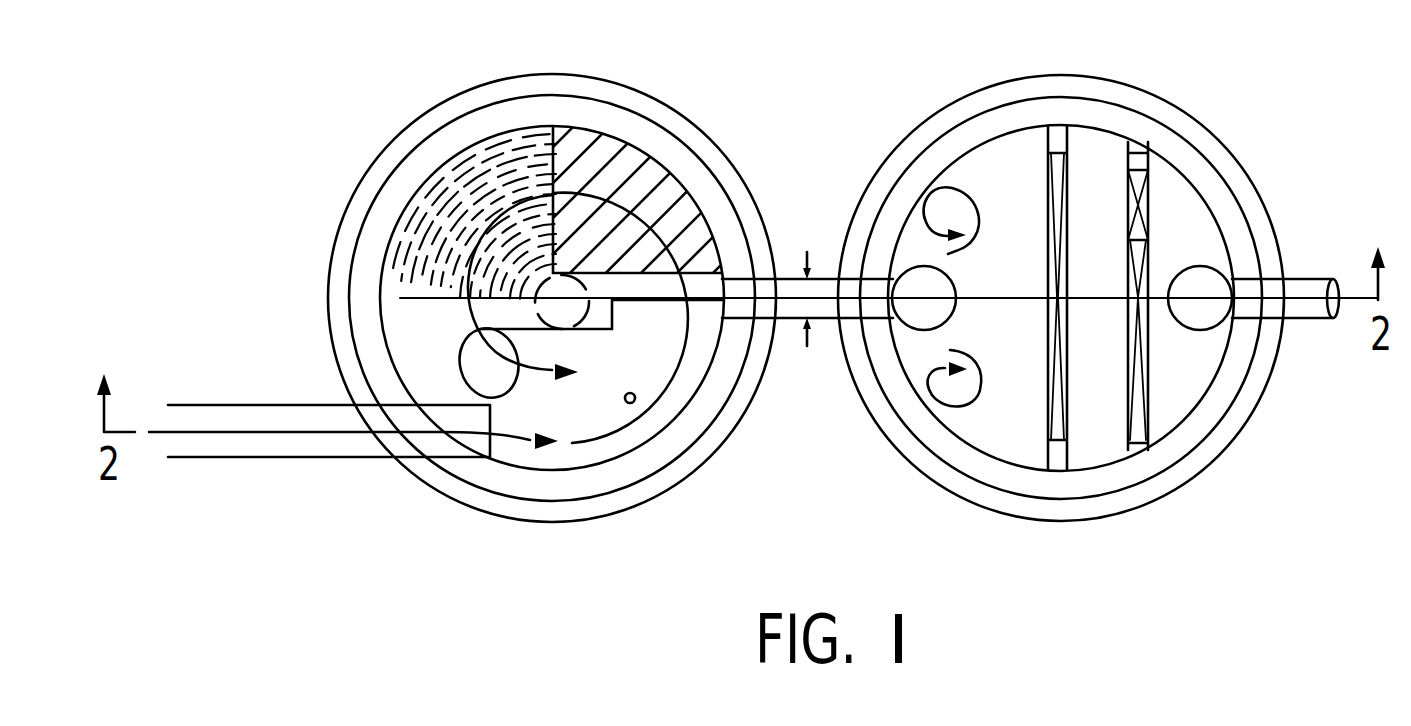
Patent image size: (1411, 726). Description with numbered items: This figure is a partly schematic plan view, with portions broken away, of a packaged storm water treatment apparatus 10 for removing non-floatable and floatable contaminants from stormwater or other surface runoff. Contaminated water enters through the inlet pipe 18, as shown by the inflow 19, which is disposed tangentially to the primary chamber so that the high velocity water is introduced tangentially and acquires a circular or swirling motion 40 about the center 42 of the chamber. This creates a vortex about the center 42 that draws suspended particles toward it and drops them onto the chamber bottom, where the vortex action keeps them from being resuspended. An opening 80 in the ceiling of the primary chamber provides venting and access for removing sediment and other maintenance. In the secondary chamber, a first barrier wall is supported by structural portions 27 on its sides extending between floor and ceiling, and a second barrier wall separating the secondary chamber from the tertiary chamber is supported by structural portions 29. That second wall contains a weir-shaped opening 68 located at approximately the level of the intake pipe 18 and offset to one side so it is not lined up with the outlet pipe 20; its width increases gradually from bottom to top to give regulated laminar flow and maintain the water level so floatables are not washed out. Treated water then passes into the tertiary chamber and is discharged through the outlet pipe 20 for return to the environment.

The packaged apparatus for treating water 10 is at (1275, 98).
The inlet pipe 18 is at (266, 430).
The contaminated water inflow 19 is at (537, 413).
The outlet pipe 20 is at (1298, 278).
The structural portions 27 is at (1048, 135).
The structural portions 29 is at (1125, 148).
The circular or swirling motion 40 is at (658, 392).
The center 42 is at (535, 298).
The opening (weir) 68 is at (1145, 208).
The opening 80 is at (461, 357).